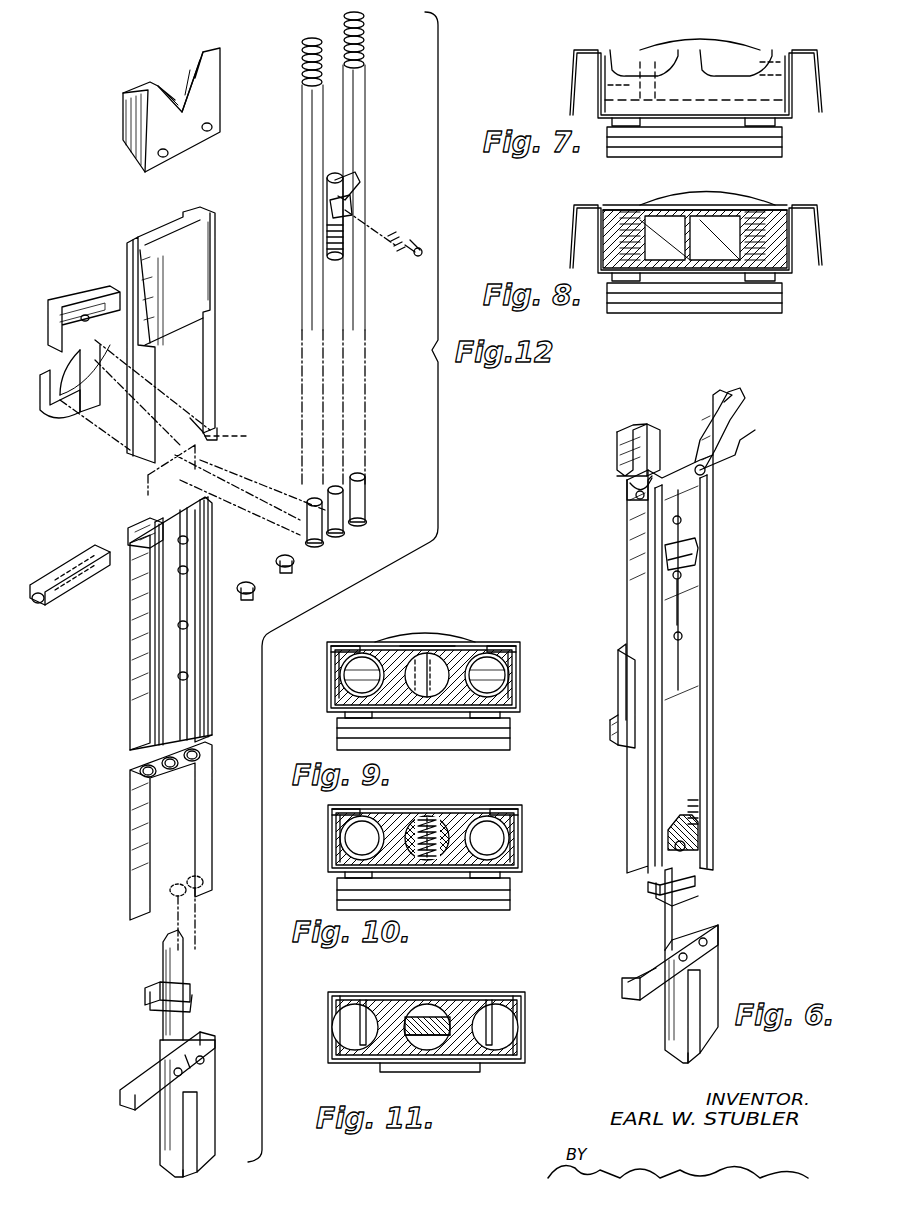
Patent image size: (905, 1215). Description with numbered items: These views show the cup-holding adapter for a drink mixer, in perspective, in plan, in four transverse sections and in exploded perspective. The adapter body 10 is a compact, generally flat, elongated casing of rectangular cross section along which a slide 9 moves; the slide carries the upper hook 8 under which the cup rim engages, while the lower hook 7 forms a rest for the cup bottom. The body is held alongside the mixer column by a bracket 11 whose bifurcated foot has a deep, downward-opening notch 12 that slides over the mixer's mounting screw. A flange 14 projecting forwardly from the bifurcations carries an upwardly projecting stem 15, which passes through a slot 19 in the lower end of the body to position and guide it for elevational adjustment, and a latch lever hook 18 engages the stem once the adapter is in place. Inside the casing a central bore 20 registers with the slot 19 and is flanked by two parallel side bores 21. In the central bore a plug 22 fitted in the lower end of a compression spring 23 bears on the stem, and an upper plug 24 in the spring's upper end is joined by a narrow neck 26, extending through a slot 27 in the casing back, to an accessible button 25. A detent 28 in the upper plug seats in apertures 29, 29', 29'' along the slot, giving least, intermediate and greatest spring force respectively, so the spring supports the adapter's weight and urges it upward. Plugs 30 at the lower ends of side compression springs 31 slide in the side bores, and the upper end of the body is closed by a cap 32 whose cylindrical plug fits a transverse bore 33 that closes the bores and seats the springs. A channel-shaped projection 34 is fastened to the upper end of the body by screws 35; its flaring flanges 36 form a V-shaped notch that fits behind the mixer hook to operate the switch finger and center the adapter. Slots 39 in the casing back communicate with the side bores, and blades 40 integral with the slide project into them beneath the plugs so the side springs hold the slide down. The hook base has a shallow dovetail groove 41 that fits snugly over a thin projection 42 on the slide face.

In FIG. 6, the hook 7 is at (595, 428).
In FIG. 12, the hook 7 is at (122, 1108).
In FIG. 7, the upper hook 8 is at (782, 152).
In FIG. 8, the upper hook 8 is at (782, 312).
In FIG. 9, the upper hook 8 is at (510, 748).
In FIG. 10, the upper hook 8 is at (510, 905).
In FIG. 6, the upper hook 8 is at (612, 758).
In FIG. 12, the upper hook 8 is at (62, 420).
In FIG. 7, the slide 9 is at (789, 110).
In FIG. 8, the slide 9 is at (789, 265).
In FIG. 9, the slide 9 is at (520, 706).
In FIG. 10, the slide 9 is at (522, 866).
In FIG. 11, the slide 9 is at (525, 1047).
In FIG. 6, the slide 9 is at (632, 790).
In FIG. 12, the slide 9 is at (130, 428).
In FIG. 8, the body 10 is at (655, 270).
In FIG. 9, the body 10 is at (512, 650).
In FIG. 10, the body 10 is at (345, 815).
In FIG. 11, the body 10 is at (395, 1003).
In FIG. 6, the body 10 is at (713, 668).
In FIG. 12, the body 10 is at (132, 848).
In FIG. 6, the bracket 11 is at (720, 968).
In FIG. 12, the bracket 11 is at (205, 1090).
In FIG. 6, the notch 12 is at (700, 1058).
In FIG. 12, the notch 12 is at (183, 1180).
In FIG. 6, the flange 14 is at (710, 922).
In FIG. 12, the flange 14 is at (205, 1030).
In FIG. 11, the stem 15 is at (438, 1036).
In FIG. 6, the stem 15 is at (690, 868).
In FIG. 12, the stem 15 is at (183, 962).
In FIG. 6, the hook 18 is at (690, 896).
In FIG. 12, the hook 18 is at (190, 1000).
In FIG. 11, the slot 19 is at (445, 1020).
In FIG. 6, the slot 19 is at (686, 850).
In FIG. 12, the slot 19 is at (185, 897).
In FIG. 9, the central bore 20 is at (438, 700).
In FIG. 10, the central bore 20 is at (425, 858).
In FIG. 11, the central bore 20 is at (420, 1005).
In FIG. 12, the central bore 20 is at (172, 770).
In FIG. 9, the bores 21 is at (340, 696).
In FIG. 10, the bores 21 is at (340, 860).
In FIG. 11, the bores 21 is at (345, 1035).
In FIG. 12, the bores 21 is at (140, 772).
In FIG. 12, the plug 22 is at (350, 550).
In FIG. 12, the compression spring 23 is at (343, 245).
In FIG. 9, the upper plug 24 is at (425, 700).
In FIG. 10, the upper plug 24 is at (448, 858).
In FIG. 12, the upper plug 24 is at (345, 176).
In FIG. 7, the button 25 is at (718, 60).
In FIG. 8, the button 25 is at (728, 206).
In FIG. 9, the button 25 is at (410, 640).
In FIG. 6, the button 25 is at (668, 560).
In FIG. 12, the button 25 is at (352, 205).
In FIG. 9, the neck 26 is at (428, 650).
In FIG. 12, the neck 26 is at (356, 185).
In FIG. 6, the slot 27 is at (680, 600).
In FIG. 10, the detent 28 is at (440, 822).
In FIG. 12, the detent 28 is at (402, 250).
In FIG. 6, the aperture 29 is at (735, 584).
In FIG. 12, the aperture 29 is at (136, 624).
In FIG. 6, the aperture 29' is at (713, 538).
In FIG. 12, the aperture 29' is at (133, 638).
In FIG. 6, the aperture 29'' is at (717, 638).
In FIG. 12, the aperture 29'' is at (133, 673).
In FIG. 9, the plugs 30 is at (360, 668).
In FIG. 10, the plugs 30 is at (348, 840).
In FIG. 12, the plugs 30 is at (365, 512).
In FIG. 9, the side compression springs 31 is at (344, 675).
In FIG. 10, the side compression springs 31 is at (345, 830).
In FIG. 6, the side compression springs 31 is at (700, 810).
In FIG. 12, the side compression springs 31 is at (300, 58).
In FIG. 7, the cap 32 is at (705, 99).
In FIG. 6, the cap 32 is at (628, 495).
In FIG. 12, the cap 32 is at (58, 578).
In FIG. 12, the bore 33 is at (138, 540).
In FIG. 7, the channel-shaped projection 34 is at (574, 88).
In FIG. 8, the channel-shaped projection 34 is at (576, 236).
In FIG. 6, the channel-shaped projection 34 is at (622, 428).
In FIG. 12, the channel-shaped projection 34 is at (222, 98).
In FIG. 8, the screws 35 is at (630, 218).
In FIG. 6, the screws 35 is at (706, 472).
In FIG. 12, the screws 35 is at (255, 592).
In FIG. 7, the flanges 36 is at (700, 57).
In FIG. 6, the flanges 36 is at (720, 410).
In FIG. 12, the flanges 36 is at (170, 105).
In FIG. 6, the slots 39 is at (700, 690).
In FIG. 12, the slots 39 is at (210, 672).
In FIG. 9, the blades 40 is at (362, 646).
In FIG. 10, the blades 40 is at (362, 814).
In FIG. 11, the blades 40 is at (345, 1057).
In FIG. 6, the blades 40 is at (700, 830).
In FIG. 12, the blades 40 is at (231, 434).
In FIG. 7, the groove 41 is at (728, 130).
In FIG. 8, the groove 41 is at (700, 300).
In FIG. 9, the groove 41 is at (465, 712).
In FIG. 10, the groove 41 is at (470, 880).
In FIG. 12, the groove 41 is at (82, 310).
In FIG. 7, the projection 42 is at (680, 128).
In FIG. 8, the projection 42 is at (670, 283).
In FIG. 9, the projection 42 is at (418, 716).
In FIG. 10, the projection 42 is at (418, 808).
In FIG. 11, the projection 42 is at (470, 1072).